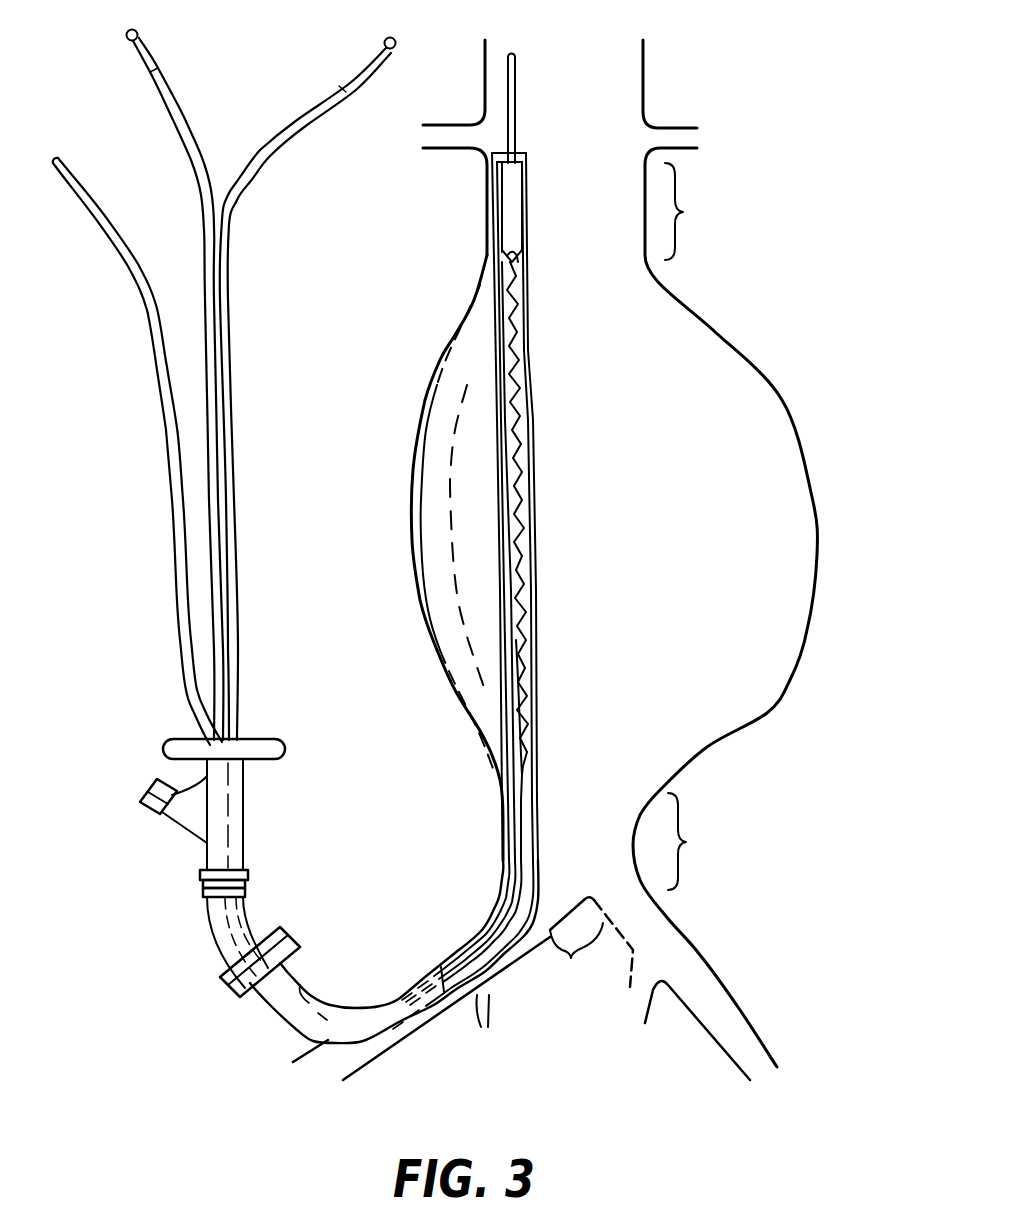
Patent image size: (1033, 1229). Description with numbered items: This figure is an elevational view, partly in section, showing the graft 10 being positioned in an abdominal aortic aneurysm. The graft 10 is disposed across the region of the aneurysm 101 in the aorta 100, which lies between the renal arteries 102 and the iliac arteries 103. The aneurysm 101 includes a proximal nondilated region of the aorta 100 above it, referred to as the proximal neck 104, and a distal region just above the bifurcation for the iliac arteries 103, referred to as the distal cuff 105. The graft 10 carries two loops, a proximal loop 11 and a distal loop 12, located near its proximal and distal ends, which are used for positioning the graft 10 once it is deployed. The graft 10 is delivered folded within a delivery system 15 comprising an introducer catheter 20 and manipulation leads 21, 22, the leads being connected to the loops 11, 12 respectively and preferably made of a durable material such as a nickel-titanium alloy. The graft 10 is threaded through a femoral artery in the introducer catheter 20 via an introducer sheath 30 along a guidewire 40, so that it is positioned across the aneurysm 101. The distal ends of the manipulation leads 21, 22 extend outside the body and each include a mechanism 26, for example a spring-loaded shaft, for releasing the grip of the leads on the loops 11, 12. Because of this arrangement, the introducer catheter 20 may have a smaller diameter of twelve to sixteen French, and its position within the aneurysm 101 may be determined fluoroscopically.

The graft 10 is at (523, 497).
The proximal loop 11 is at (522, 266).
The distal loop 12 is at (543, 706).
The delivery system 15 is at (565, 426).
The introducer catheter 20 is at (262, 905).
The manipulation lead 21 is at (198, 204).
The manipulation lead 22 is at (278, 152).
The mechanism 26 is at (141, 38).
The introducer sheath 30 is at (323, 997).
The guidewire 40 is at (170, 500).
The aorta 100 is at (648, 72).
The aneurysm 101 is at (817, 497).
The renal arteries 102 is at (447, 150).
The iliac arteries 103 is at (591, 946).
The proximal neck 104 is at (700, 211).
The distal cuff 105 is at (707, 841).